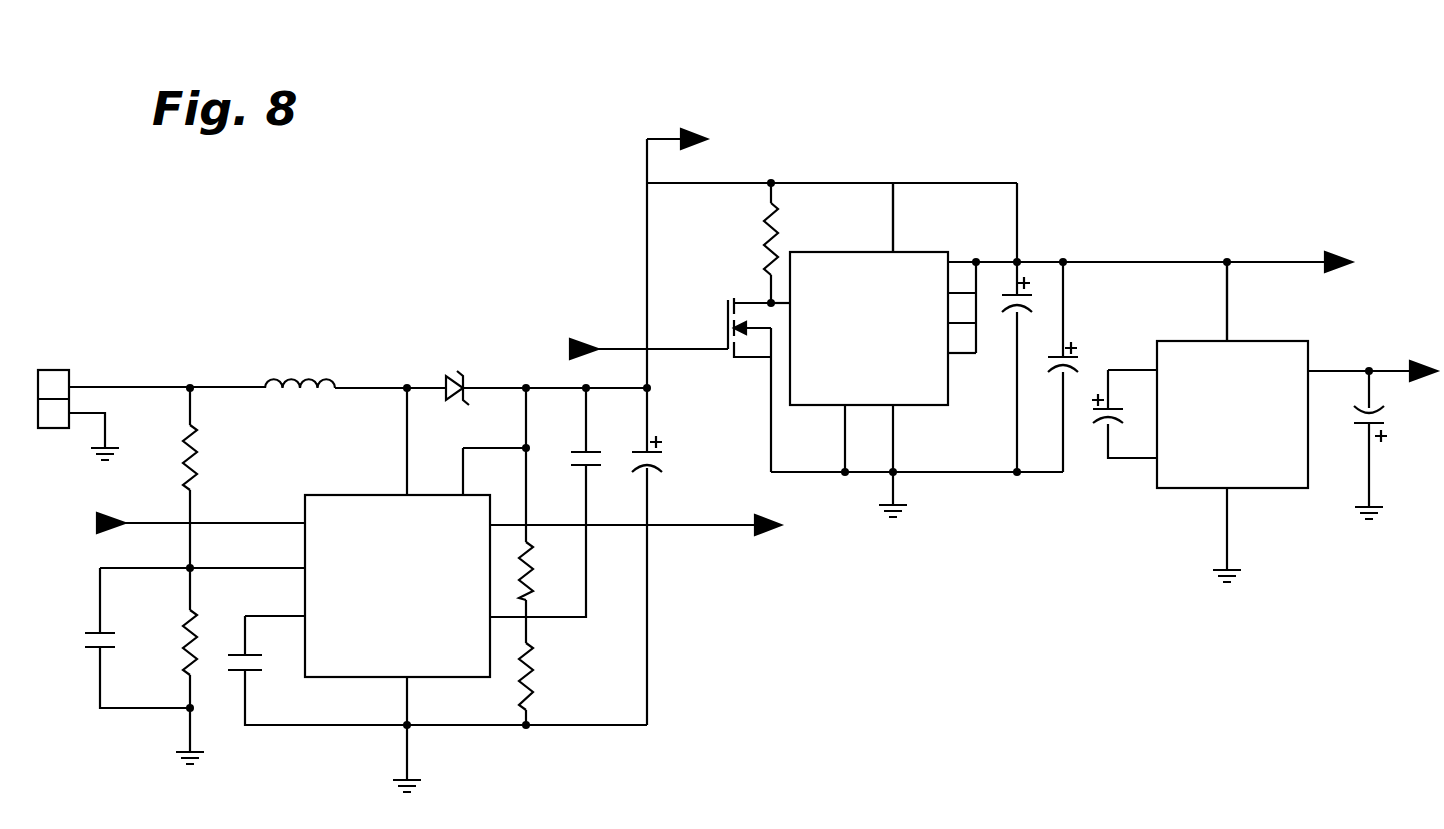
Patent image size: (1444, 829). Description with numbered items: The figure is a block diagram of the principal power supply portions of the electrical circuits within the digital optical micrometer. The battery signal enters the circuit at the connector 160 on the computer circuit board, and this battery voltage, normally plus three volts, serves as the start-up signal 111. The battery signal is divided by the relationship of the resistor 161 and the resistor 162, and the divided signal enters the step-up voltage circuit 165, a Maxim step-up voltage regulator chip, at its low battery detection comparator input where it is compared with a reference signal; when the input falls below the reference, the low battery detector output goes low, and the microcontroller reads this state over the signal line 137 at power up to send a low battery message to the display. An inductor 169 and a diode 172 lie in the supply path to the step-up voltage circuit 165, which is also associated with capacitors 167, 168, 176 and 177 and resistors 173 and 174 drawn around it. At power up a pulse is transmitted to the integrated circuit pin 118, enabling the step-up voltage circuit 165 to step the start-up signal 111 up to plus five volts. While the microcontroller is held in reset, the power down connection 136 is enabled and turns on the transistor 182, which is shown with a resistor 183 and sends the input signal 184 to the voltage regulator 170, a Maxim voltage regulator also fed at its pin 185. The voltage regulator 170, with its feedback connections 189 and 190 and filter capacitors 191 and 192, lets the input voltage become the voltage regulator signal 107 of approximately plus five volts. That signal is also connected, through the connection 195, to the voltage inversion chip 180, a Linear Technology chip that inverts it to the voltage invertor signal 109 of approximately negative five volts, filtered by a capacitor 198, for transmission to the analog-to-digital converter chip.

The voltage regulator signal 107 is at (1338, 256).
The voltage invertor signal 109 is at (1425, 362).
The start-up signal 111 is at (688, 137).
The integrated circuit pin 118 is at (305, 518).
The power down connection 136 is at (578, 340).
The signal line 137 is at (778, 535).
The connector 160 is at (52, 370).
The resistor 161 is at (199, 440).
The resistor 162 is at (199, 623).
The step-up voltage circuit 165 is at (400, 660).
The capacitor 167 is at (104, 628).
The capacitor 168 is at (260, 637).
The inductor 169 is at (283, 378).
The voltage regulator 170 is at (882, 397).
The zener diode 172 is at (470, 345).
The resistor 173 is at (528, 575).
The resistor 174 is at (530, 672).
The capacitor 176 is at (586, 450).
The electrolytic capacitor 177 is at (668, 470).
The voltage inversion chip 180 is at (1250, 482).
The transistor 182 is at (728, 326).
The resistor 183 is at (778, 228).
The input signal 184 is at (771, 300).
The regulator supply input 185 is at (893, 218).
The regulator feedback connection 189 is at (965, 298).
The regulator feedback connection 190 is at (960, 357).
The electrolytic capacitor 191 is at (1040, 316).
The electrolytic capacitor 192 is at (1082, 358).
The linear chip input connection 195 is at (1227, 315).
The electrolytic capacitor 198 is at (1378, 414).